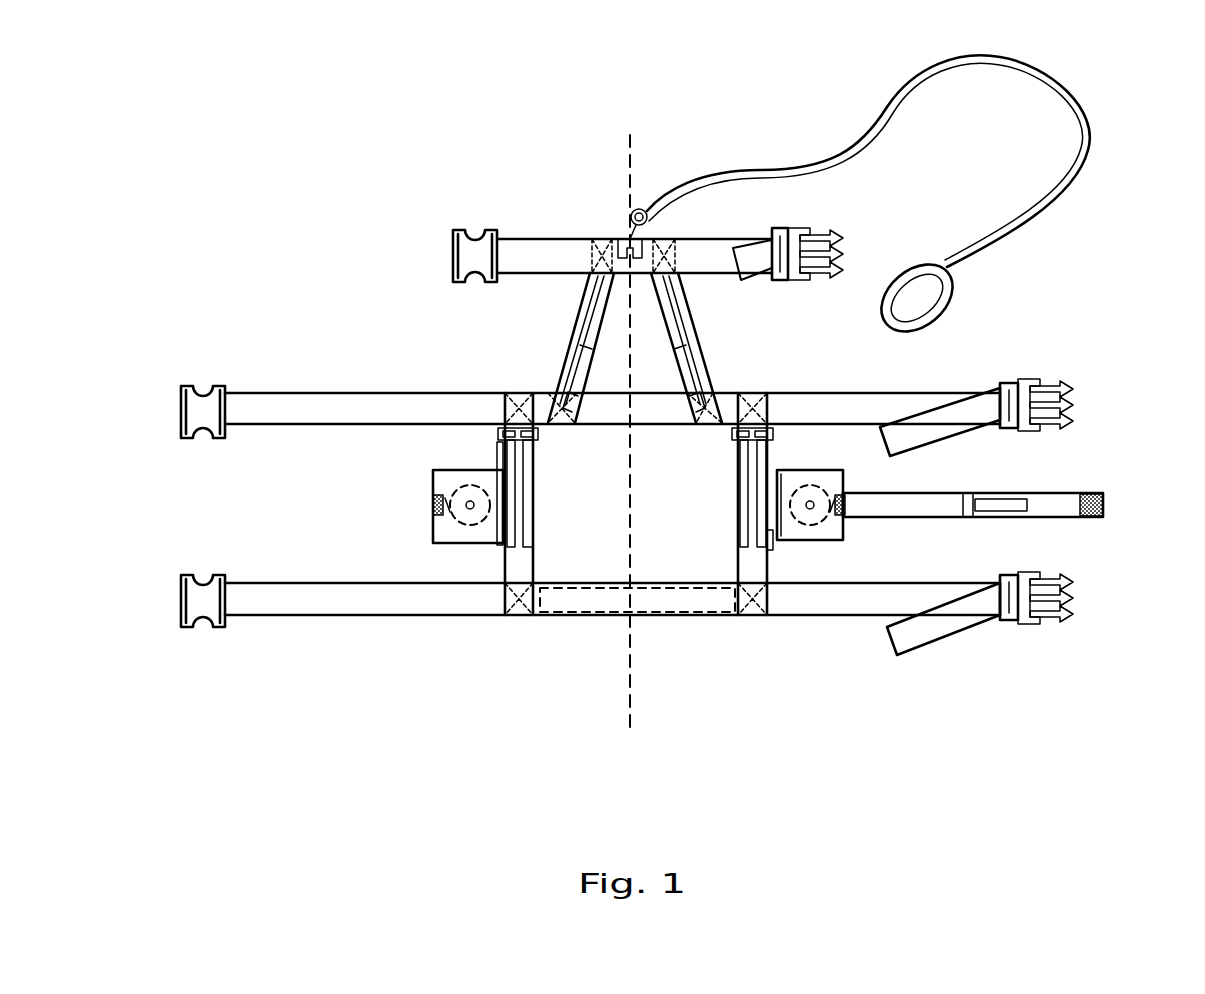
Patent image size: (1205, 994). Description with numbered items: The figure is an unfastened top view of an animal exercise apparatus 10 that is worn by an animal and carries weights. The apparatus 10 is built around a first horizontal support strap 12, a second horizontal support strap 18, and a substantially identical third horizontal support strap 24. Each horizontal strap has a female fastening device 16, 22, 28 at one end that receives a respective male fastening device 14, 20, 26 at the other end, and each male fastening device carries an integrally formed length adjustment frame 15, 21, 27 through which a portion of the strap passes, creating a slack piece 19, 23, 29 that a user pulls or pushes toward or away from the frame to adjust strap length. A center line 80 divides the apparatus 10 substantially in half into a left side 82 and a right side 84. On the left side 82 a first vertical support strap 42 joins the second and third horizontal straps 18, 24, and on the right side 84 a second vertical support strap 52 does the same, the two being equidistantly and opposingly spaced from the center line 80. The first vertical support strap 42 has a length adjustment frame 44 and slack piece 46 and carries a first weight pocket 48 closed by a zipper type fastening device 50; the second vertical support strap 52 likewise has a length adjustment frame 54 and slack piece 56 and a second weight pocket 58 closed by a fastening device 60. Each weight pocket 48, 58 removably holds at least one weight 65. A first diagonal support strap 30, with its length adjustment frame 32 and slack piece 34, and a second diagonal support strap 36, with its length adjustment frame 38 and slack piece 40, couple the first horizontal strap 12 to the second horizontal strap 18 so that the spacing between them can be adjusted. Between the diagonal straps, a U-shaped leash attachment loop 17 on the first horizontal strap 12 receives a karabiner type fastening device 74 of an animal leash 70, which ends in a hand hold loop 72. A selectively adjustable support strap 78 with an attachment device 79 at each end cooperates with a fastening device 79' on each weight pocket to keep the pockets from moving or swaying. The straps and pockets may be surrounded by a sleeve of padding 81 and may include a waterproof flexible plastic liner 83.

The animal exercise apparatus 10 is at (212, 130).
The first selectively adjustable horizontal support strap 12 is at (537, 238).
The male fastening device 14 is at (838, 241).
The first integrally formed length adjustment frame 15 is at (782, 232).
The female fastening device 16 is at (452, 232).
The leash attachment loop 17 is at (650, 228).
The second selectively adjustable horizontal support strap 18 is at (357, 392).
The slack piece 19 is at (760, 283).
The male fastening device 20 is at (1062, 386).
The second integrally formed length adjustment frame 21 is at (1000, 386).
The female fastening device 22 is at (183, 390).
The slack piece 23 is at (958, 440).
The third selectively adjustable horizontal support strap 24 is at (268, 583).
The male fastening device 26 is at (1060, 576).
The third integrally formed length adjustment frame 27 is at (1003, 578).
The female fastening device 28 is at (183, 580).
The slack piece 29 is at (960, 642).
The first selectively adjustable diagonal support strap 30 is at (586, 300).
The length adjustment frame 32 is at (575, 338).
The slack piece 34 is at (571, 366).
The second selectively adjustable diagonal support strap 36 is at (688, 298).
The length adjustment frame 38 is at (700, 338).
The slack piece 40 is at (700, 366).
The first selectively adjustable vertical support strap 42 is at (533, 560).
The length adjustment frame 44 is at (540, 435).
The slack piece 46 is at (513, 506).
The first weight pocket 48 is at (432, 470).
The fastening device 50 is at (497, 546).
The second selectively adjustable vertical support strap 52 is at (737, 560).
The length adjustment frame 54 is at (732, 435).
The slack piece 56 is at (755, 506).
The second weight pocket 58 is at (836, 481).
The fastening device 60 is at (775, 541).
The weight 65 is at (433, 516).
The animal leash 70 is at (793, 166).
The hand hold loop 72 is at (950, 306).
The karabiner type fastening device 74 is at (645, 209).
The selectively adjustable support strap 78 is at (1055, 492).
The attachment device 79 is at (1123, 474).
The fastening device 79' is at (661, 485).
The center line 80 is at (636, 688).
The sleeve of padding 81 is at (683, 594).
The left side 82 is at (345, 268).
The flexible plastic liner 83 is at (790, 470).
The right side 84 is at (877, 686).